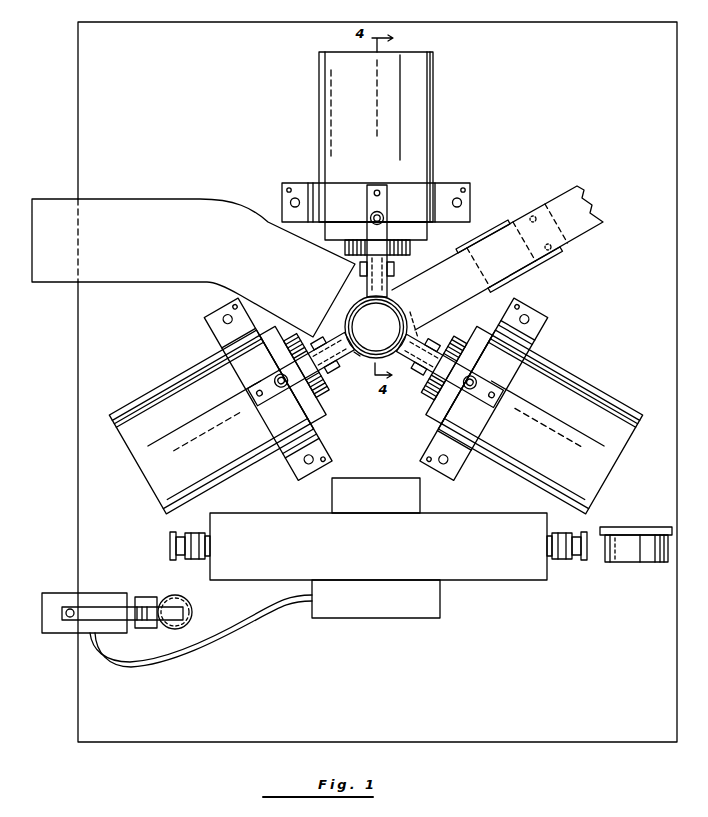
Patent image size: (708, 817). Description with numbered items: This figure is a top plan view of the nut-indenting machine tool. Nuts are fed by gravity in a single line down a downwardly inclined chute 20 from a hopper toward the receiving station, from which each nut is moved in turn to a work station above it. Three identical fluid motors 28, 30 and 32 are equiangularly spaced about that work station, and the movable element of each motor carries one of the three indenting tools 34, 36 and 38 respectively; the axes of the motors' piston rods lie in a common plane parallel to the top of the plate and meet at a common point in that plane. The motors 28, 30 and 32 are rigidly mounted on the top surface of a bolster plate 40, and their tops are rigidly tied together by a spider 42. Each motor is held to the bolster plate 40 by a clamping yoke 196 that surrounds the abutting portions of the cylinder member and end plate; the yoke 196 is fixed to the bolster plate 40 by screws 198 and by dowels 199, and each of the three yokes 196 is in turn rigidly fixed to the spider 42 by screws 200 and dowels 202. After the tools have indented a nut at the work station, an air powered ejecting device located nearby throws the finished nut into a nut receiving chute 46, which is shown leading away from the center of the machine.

The downwardly inclined chute 20 is at (575, 186).
The fluid motor 28 is at (433, 137).
The fluid motor 30 is at (578, 388).
The fluid motor 32 is at (170, 392).
The indenting tool 34 is at (397, 300).
The indenting tool 36 is at (414, 330).
The indenting tool 38 is at (354, 362).
The bolster plate 40 is at (580, 742).
The spider 42 is at (384, 238).
The nut receiving chute 46 is at (171, 198).
The clamping yoke 196 is at (471, 206).
The screws 198 is at (296, 207).
The dowels 199 is at (290, 188).
The screws 200 is at (370, 216).
The dowels 202 is at (377, 190).